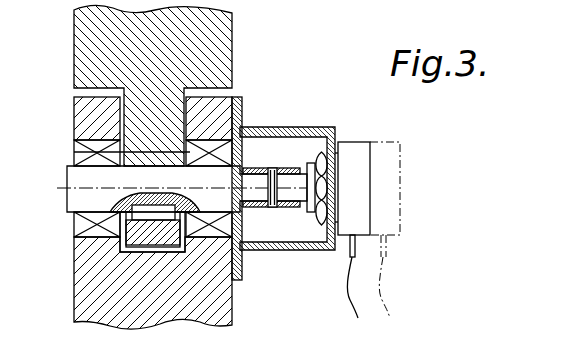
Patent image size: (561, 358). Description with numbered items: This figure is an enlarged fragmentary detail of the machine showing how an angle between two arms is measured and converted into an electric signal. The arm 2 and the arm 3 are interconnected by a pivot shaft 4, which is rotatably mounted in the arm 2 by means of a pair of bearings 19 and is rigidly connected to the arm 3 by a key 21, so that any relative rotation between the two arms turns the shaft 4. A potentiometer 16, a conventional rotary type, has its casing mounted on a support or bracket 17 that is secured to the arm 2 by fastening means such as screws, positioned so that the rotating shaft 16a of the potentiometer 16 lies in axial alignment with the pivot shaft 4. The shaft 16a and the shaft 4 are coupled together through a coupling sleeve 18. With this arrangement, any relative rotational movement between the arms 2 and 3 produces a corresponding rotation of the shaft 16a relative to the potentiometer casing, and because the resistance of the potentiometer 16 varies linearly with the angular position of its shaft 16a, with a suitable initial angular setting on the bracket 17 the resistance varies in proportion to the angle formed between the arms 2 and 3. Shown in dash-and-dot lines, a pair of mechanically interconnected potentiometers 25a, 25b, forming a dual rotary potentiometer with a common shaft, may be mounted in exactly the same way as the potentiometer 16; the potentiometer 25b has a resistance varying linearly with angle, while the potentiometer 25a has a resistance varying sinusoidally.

The arm 2 is at (74, 277).
The arm 3 is at (232, 55).
The pivot shaft 4 is at (70, 200).
The potentiometer 16 is at (357, 142).
The rotating shaft 16a is at (292, 195).
The support or bracket 17 is at (266, 127).
The coupling sleeve 18 is at (274, 162).
The bearings 19 is at (76, 151).
The key 21 is at (143, 213).
The potentiometer 25a is at (405, 168).
The potentiometer 25b is at (384, 276).